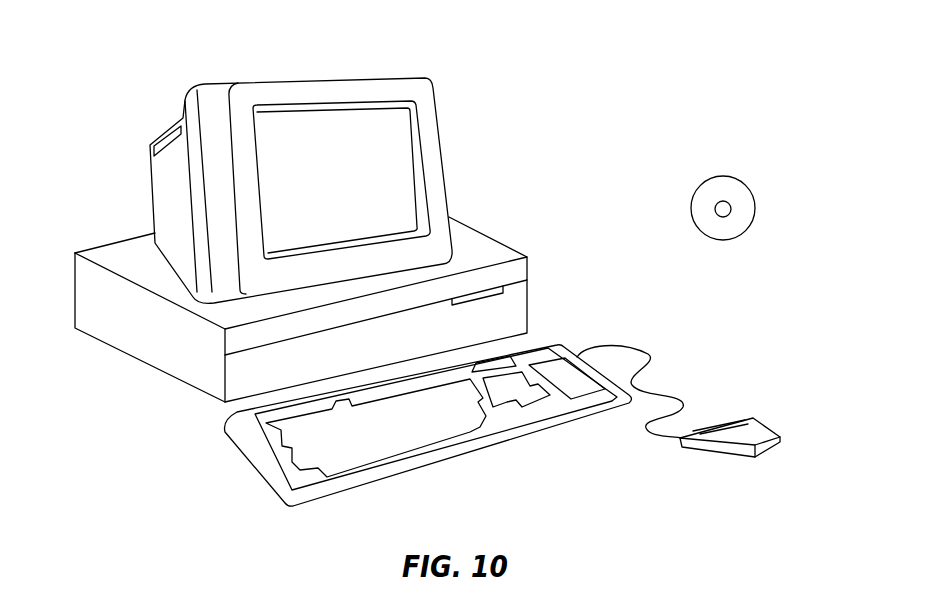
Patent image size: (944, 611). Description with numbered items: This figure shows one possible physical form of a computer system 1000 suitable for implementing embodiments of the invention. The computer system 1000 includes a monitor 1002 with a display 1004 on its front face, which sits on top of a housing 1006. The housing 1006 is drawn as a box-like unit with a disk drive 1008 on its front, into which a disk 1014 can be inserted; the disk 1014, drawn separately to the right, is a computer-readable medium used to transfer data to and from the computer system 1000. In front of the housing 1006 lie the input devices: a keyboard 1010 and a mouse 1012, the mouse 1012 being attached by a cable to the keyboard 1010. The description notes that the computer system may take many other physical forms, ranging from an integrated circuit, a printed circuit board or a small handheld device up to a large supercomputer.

The computer system 1000 is at (644, 79).
The monitor 1002 is at (447, 190).
The display 1004 is at (407, 142).
The housing 1006 is at (190, 303).
The disk drive 1008 is at (503, 290).
The keyboard 1010 is at (430, 463).
The mouse 1012 is at (753, 420).
The disk 1014 is at (740, 177).